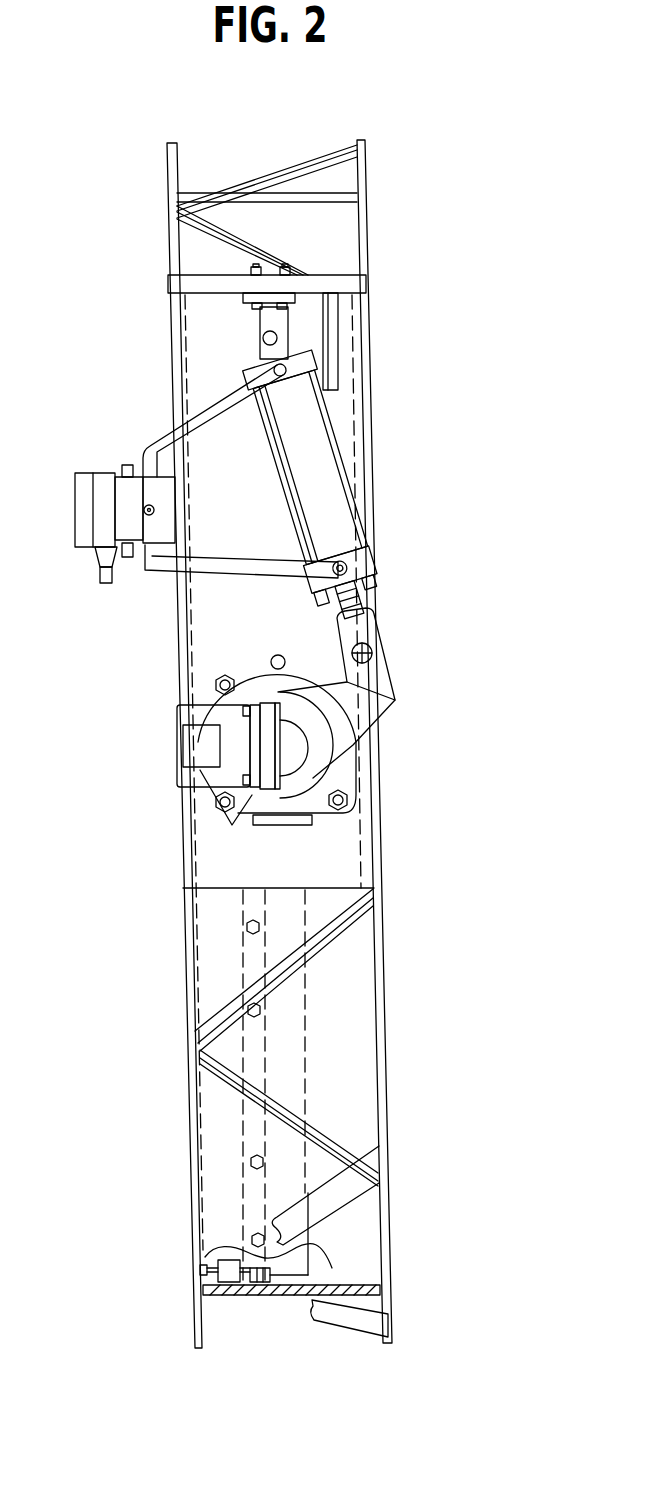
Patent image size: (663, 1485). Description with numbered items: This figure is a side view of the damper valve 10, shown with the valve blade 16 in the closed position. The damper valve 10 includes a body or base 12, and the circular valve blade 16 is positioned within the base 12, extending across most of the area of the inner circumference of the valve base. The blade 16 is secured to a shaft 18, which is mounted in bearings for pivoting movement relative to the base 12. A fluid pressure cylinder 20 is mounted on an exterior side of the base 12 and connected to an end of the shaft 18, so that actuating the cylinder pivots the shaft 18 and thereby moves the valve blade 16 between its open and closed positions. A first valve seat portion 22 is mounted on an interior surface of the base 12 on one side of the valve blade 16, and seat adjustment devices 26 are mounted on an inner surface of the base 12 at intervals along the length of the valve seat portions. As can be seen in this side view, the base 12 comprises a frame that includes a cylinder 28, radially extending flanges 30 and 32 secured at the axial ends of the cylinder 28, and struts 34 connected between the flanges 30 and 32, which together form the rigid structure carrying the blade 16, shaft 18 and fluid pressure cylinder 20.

The damper valve 10 is at (140, 188).
The body or base 12 is at (168, 251).
The valve blade 16 is at (288, 1018).
The shaft 18 is at (293, 748).
The fluid pressure cylinder 20 is at (308, 472).
The first valve seat portion 22 is at (255, 1135).
The seat adjustment devices 26 is at (233, 1283).
The cylinder 28 is at (293, 1288).
The radially extending flange 30 is at (193, 1272).
The radially extending flange 32 is at (393, 1238).
The struts 34 is at (203, 1060).